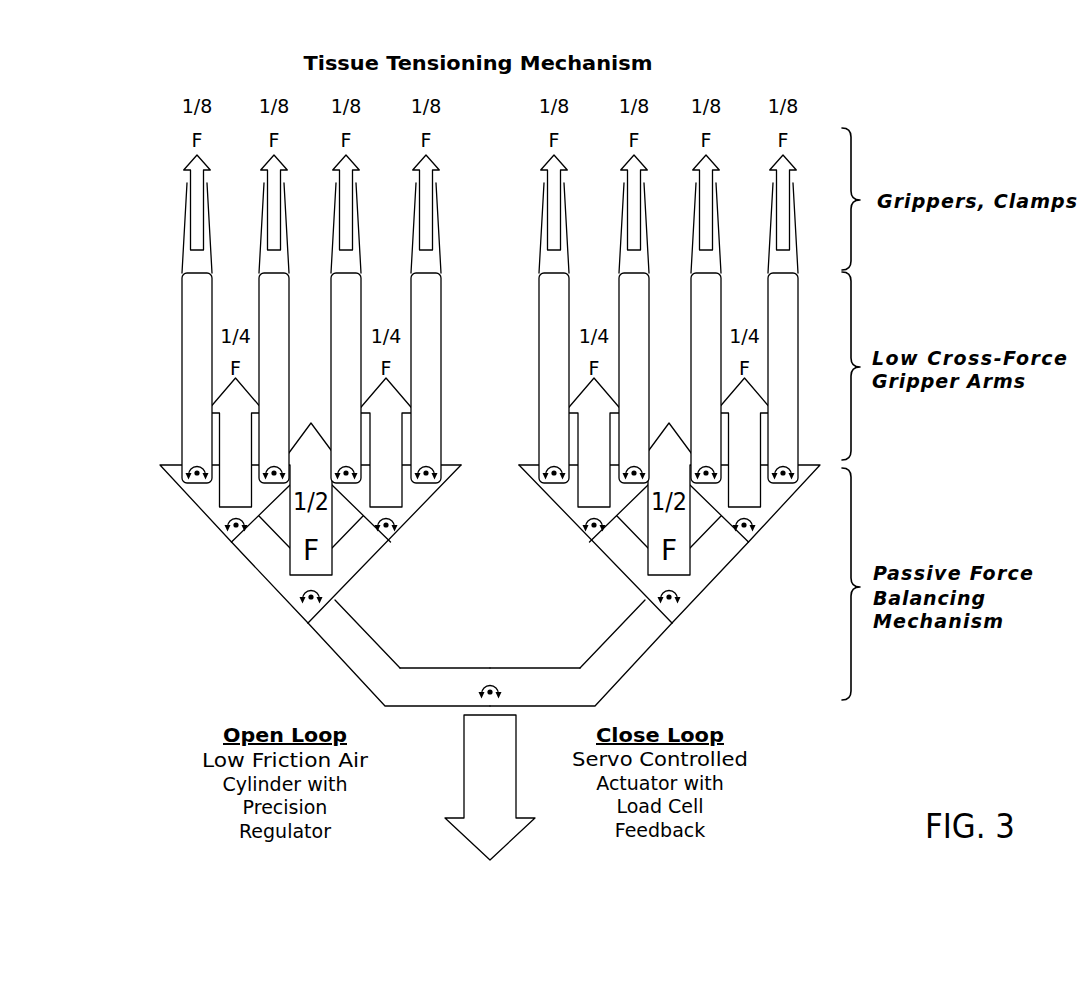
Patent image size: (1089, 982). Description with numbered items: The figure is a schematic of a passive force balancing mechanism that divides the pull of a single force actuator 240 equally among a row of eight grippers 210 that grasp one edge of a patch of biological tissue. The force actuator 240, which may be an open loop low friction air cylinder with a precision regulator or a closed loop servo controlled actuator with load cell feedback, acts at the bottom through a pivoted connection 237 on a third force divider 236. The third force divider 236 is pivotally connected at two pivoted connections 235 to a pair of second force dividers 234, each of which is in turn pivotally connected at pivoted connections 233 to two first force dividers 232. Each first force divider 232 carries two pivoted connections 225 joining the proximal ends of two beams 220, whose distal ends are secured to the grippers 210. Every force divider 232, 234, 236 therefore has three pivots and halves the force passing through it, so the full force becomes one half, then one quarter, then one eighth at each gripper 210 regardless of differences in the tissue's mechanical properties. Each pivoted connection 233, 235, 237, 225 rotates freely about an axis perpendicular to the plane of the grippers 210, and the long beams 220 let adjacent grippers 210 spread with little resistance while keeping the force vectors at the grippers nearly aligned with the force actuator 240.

The gripper 210 is at (184, 215).
The beam 220 is at (275, 305).
The pivoted connection 225 is at (190, 468).
The first force divider 232 is at (190, 500).
The pivoted connection 233 is at (230, 533).
The second force divider 234 is at (257, 570).
The pivoted connection 235 is at (303, 610).
The third force divider 236 is at (343, 663).
The pivoted connection 237 is at (490, 680).
The force actuator 240 is at (463, 775).